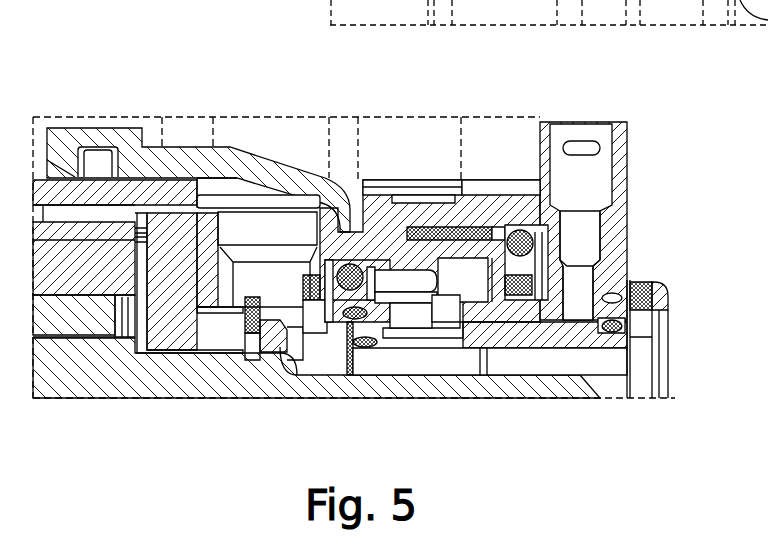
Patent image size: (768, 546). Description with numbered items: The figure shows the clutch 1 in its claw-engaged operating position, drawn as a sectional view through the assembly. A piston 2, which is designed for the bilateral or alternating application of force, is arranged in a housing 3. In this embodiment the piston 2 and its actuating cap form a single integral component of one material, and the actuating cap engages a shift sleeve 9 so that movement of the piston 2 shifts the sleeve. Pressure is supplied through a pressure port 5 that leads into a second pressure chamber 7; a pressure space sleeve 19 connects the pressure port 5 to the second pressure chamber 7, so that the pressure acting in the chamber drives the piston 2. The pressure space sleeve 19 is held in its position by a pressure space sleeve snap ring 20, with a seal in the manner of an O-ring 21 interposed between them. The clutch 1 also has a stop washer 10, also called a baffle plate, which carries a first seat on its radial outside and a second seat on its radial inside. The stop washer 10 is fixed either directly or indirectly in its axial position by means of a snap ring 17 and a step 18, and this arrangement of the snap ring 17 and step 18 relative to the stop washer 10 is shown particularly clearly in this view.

The clutch 1 is at (190, 96).
The piston 2 is at (345, 185).
The housing 3 is at (448, 308).
The pressure port 5 is at (587, 231).
The second pressure chamber 7 is at (467, 272).
The shift sleeve 9 is at (103, 183).
The stop washer 10 is at (338, 312).
The snap ring 17 is at (320, 322).
The step 18 is at (383, 314).
The pressure space sleeve 19 is at (478, 347).
The pressure space sleeve snap ring 20 is at (668, 312).
The O-ring 21 is at (605, 334).